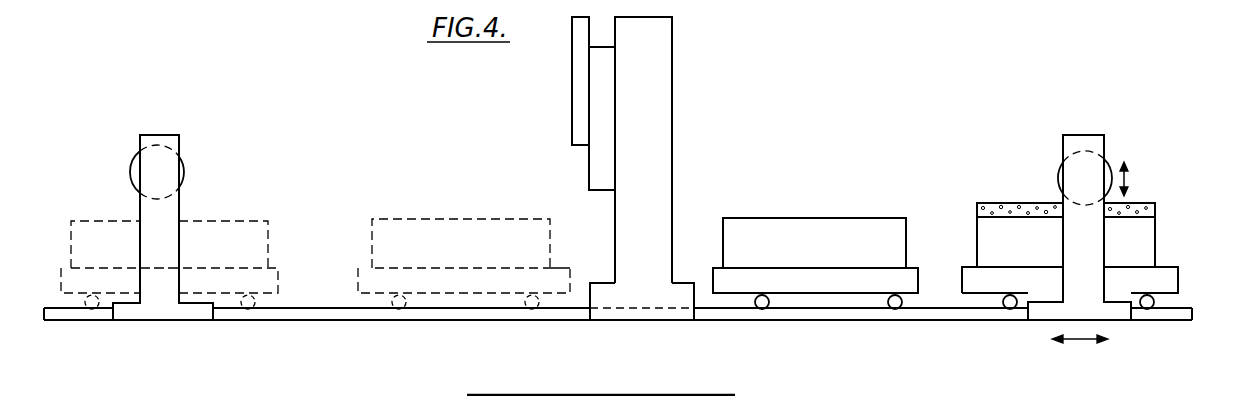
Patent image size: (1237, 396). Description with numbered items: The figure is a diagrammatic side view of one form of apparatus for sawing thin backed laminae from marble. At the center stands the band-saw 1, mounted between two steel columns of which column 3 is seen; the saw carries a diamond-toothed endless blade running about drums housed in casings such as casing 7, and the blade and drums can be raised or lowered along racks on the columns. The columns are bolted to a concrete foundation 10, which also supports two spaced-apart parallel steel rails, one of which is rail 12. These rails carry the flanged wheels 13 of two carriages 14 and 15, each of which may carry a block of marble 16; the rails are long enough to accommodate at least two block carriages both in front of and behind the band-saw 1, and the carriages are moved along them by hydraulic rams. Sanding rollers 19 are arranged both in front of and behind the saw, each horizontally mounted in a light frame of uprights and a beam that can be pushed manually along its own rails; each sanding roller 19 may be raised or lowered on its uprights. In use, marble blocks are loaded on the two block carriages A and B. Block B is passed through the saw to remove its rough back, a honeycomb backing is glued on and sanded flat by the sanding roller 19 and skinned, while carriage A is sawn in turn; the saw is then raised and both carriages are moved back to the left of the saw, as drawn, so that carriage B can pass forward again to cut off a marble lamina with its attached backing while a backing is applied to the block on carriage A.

The band-saw 1 is at (633, 192).
The steel column 3 is at (652, 62).
The casing 7 is at (598, 160).
The concrete foundation 10 is at (638, 298).
The steel rail 12 is at (57, 316).
The flanged wheels 13 is at (92, 309).
The carriage 14 is at (263, 280).
The carriage 15 is at (483, 291).
The block of marble 16 is at (210, 245).
The sanding roller 19 is at (130, 173).
The block carriage A is at (68, 277).
The block carriage B is at (367, 277).